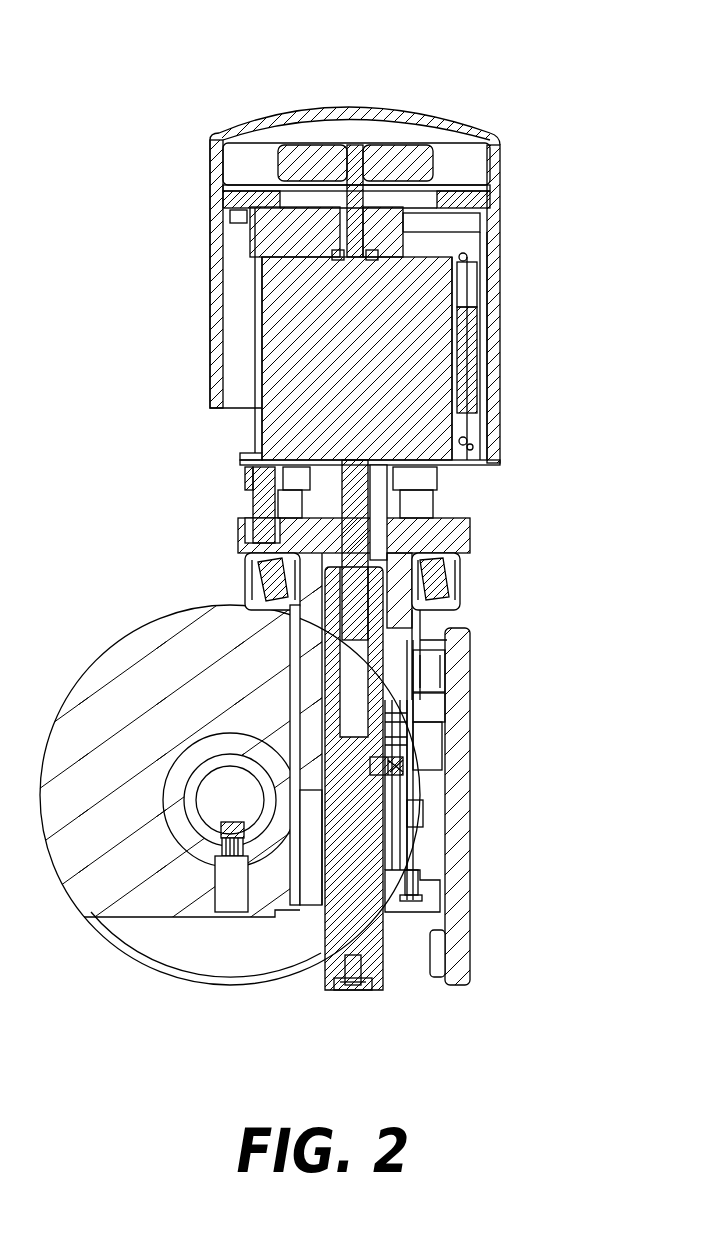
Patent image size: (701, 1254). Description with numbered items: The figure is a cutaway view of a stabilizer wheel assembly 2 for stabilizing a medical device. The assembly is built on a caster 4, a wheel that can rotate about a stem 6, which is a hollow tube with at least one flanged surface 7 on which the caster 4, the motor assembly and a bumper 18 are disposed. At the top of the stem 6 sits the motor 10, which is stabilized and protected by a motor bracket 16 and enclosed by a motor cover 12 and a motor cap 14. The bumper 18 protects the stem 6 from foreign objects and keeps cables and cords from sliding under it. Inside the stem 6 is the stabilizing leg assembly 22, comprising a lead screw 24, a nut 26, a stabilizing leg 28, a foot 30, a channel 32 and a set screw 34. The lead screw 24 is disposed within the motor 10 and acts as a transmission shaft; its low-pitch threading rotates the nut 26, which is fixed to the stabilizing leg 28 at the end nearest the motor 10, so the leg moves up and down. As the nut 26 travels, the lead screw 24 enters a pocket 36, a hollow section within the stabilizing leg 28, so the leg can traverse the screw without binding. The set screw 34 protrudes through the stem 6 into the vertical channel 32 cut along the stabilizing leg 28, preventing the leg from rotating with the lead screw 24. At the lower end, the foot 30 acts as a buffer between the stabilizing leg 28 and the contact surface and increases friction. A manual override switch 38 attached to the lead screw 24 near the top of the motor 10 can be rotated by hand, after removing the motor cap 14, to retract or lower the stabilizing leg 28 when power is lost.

The stabilizer wheel assembly 2 is at (298, 68).
The caster 4 is at (190, 940).
The stem 6 is at (300, 620).
The flanged surface 7 is at (450, 536).
The motor 10 is at (282, 432).
The motor cover 12 is at (500, 275).
The motor cap 14 is at (500, 132).
The motor bracket 16 is at (470, 390).
The bumper 18 is at (470, 755).
The stabilizing leg assembly 22 is at (315, 657).
The lead screw 24 is at (370, 535).
The nut 26 is at (380, 575).
The stabilizing leg 28 is at (385, 800).
The foot 30 is at (360, 988).
The channel 32 is at (405, 832).
The set screw 34 is at (392, 770).
The pocket 36 is at (440, 668).
The manual override switch 38 is at (400, 148).